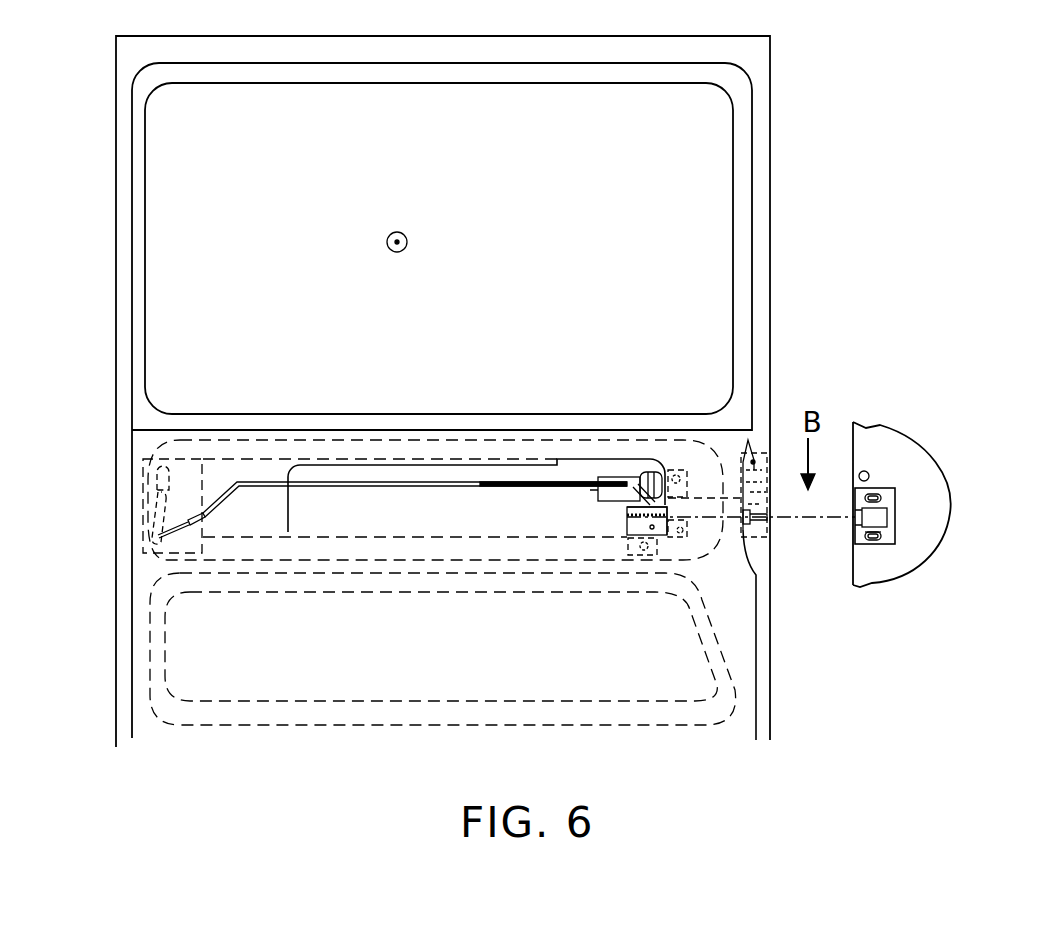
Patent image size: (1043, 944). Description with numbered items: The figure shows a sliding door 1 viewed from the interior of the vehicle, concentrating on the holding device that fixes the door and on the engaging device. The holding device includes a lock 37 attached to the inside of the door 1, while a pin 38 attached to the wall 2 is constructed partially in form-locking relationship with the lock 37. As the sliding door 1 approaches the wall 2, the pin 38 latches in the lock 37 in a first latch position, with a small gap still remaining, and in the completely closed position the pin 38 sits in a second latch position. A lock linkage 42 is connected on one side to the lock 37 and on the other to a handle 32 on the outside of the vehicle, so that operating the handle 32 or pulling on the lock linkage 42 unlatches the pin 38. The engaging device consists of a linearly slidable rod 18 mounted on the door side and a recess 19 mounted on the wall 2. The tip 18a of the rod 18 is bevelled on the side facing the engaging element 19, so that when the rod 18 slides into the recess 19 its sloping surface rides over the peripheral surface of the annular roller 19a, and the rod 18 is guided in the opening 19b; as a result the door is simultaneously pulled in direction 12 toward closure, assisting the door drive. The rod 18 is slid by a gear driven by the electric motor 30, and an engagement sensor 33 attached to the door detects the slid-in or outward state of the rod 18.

The sliding door 1 is at (757, 117).
The wall 2 is at (933, 497).
The direction 12 is at (405, 233).
The rod 18 is at (715, 542).
The tip 18a is at (770, 536).
The recess 19 is at (888, 497).
The annular roller 19a is at (877, 537).
The opening 19b is at (880, 517).
The electric motor 30 is at (612, 493).
The handle 32 is at (150, 470).
The engagement sensor 33 is at (682, 533).
The lock 37 is at (748, 430).
The pin 38 is at (867, 471).
The lock linkage 42 is at (502, 483).